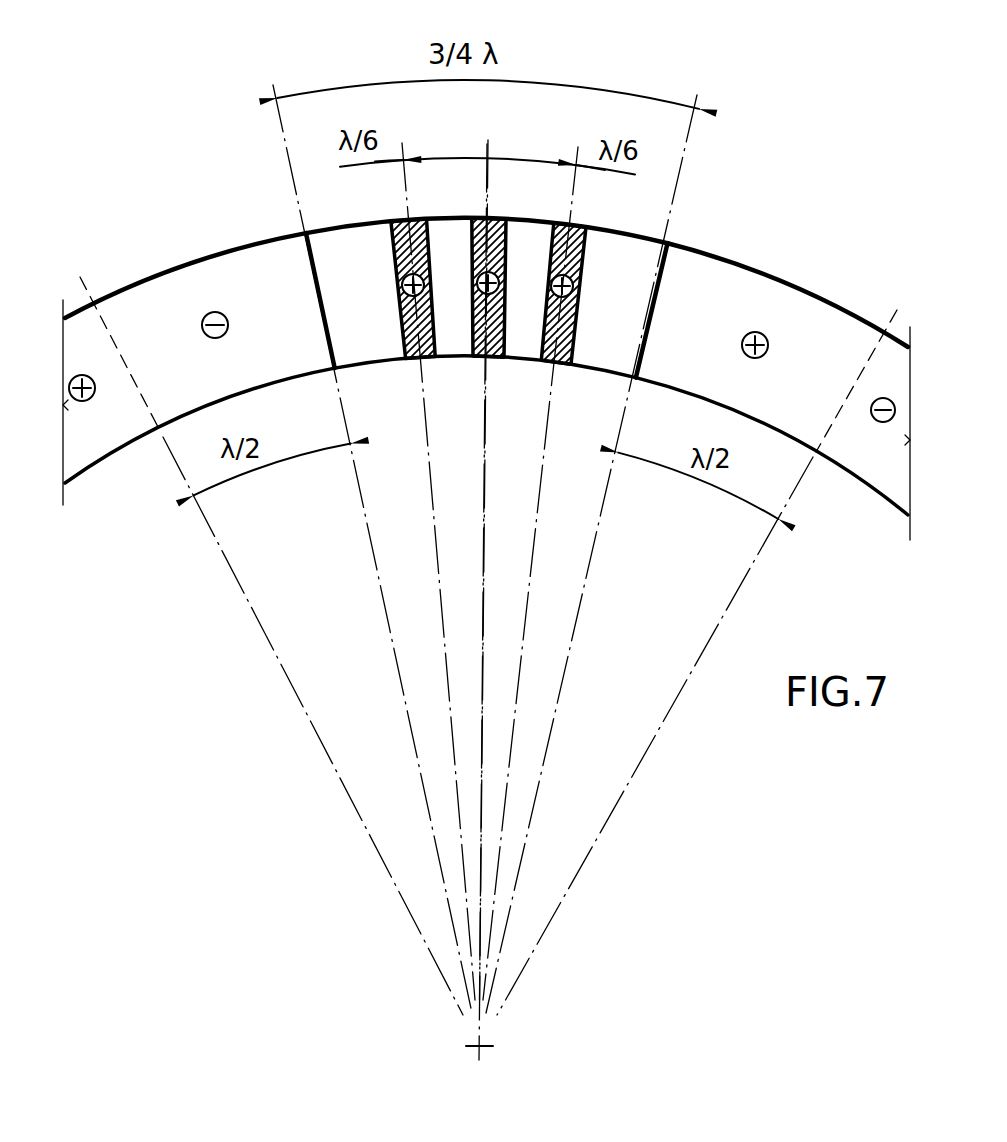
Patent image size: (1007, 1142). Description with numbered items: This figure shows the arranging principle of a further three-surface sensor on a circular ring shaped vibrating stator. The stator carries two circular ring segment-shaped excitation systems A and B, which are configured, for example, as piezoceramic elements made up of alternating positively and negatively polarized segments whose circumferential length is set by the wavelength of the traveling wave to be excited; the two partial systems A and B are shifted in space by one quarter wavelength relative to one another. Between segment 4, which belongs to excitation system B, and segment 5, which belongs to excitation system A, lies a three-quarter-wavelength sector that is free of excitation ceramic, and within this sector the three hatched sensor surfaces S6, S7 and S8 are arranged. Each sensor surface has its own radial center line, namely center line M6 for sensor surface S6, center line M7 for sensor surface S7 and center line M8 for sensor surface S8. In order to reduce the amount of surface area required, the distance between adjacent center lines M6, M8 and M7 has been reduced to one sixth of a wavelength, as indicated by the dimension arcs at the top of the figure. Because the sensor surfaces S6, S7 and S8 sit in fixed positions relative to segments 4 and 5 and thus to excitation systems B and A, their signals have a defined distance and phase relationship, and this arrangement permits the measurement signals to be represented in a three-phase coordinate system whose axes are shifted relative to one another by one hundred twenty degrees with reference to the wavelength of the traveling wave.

The segment 4 is at (185, 282).
The segment 5 is at (781, 306).
The sensor surface S6 is at (406, 231).
The sensor surface S7 is at (590, 236).
The sensor surface S8 is at (497, 225).
The center line M6 is at (431, 513).
The center line M7 is at (565, 505).
The center line M8 is at (484, 440).
The excitation system A is at (867, 296).
The excitation system B is at (118, 262).